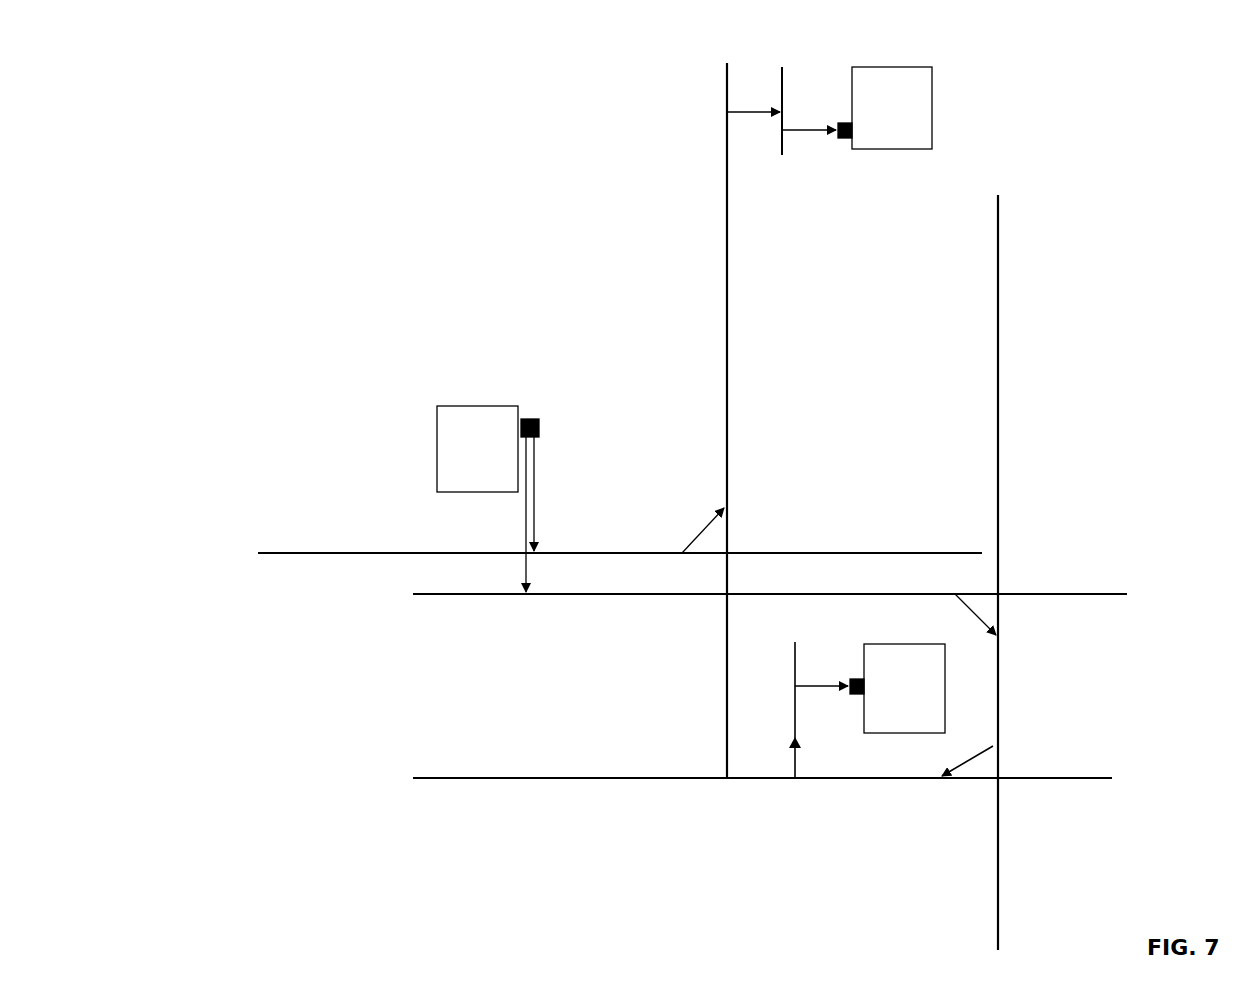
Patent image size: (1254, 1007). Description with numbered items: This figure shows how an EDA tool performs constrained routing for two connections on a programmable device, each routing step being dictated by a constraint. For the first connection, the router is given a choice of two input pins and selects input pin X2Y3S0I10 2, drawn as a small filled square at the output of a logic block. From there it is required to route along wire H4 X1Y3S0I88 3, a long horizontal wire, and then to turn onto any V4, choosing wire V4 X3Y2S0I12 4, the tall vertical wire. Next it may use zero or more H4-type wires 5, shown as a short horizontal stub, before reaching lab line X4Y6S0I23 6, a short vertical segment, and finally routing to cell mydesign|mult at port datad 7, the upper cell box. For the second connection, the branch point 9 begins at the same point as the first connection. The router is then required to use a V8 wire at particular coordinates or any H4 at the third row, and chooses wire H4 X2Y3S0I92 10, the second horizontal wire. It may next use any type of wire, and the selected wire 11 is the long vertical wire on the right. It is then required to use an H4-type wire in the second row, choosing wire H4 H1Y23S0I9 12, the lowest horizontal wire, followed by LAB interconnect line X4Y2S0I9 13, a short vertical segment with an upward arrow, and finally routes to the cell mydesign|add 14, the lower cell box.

The input pin X2Y3S0I10 2 is at (546, 500).
The wire H4 X1Y3S0I88 3 is at (620, 571).
The wire V4 X3Y2S0I12 4 is at (704, 420).
The zero or more H4-type wires 5 is at (753, 100).
The lab line X4Y6S0I23 6 is at (770, 98).
The mydesign|mult port datad 7 is at (919, 116).
The branch point 9 is at (533, 449).
The wire H4 X2Y3S0I92 10 is at (770, 609).
The wire of any type 11 is at (970, 572).
The wire H4 H1Y23S0I9 12 is at (762, 794).
The LAB interconnect line X4Y2S0I9 13 is at (779, 704).
The mydesign|add 14 is at (924, 688).